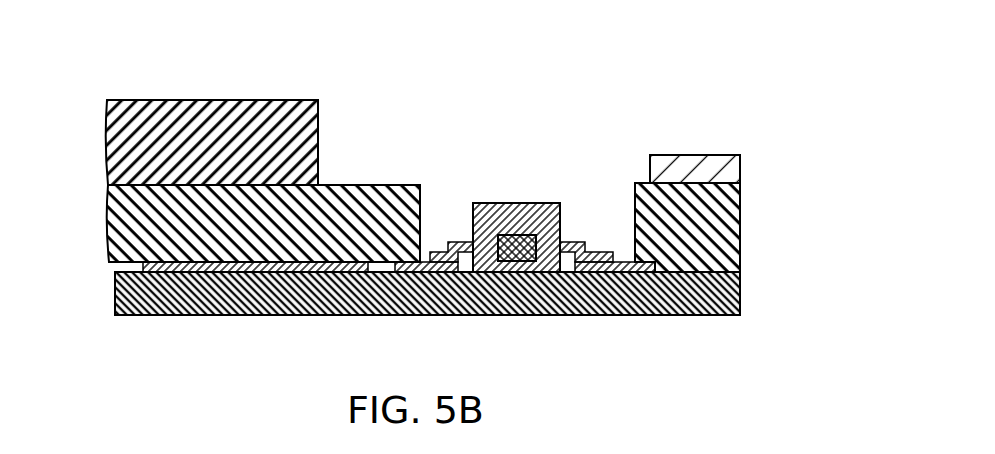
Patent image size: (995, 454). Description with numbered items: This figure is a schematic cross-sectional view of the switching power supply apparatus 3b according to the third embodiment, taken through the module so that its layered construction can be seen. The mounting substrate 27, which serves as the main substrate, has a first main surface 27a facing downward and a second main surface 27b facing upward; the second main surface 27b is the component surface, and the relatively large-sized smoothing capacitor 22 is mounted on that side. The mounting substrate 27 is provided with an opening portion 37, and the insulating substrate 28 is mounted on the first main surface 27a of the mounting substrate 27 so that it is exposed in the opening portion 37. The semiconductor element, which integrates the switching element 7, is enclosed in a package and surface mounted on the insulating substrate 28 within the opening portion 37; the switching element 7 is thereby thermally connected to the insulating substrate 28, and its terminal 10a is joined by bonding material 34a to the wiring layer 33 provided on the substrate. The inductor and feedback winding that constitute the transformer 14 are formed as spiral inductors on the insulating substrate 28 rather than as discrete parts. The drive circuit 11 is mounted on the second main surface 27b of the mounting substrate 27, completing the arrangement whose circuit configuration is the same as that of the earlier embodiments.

The switching power supply apparatus 3b is at (733, 72).
The smoothing capacitor 22 is at (296, 113).
The mounting substrate 27 is at (383, 218).
The second main surface 27b is at (380, 183).
The first main surface 27a is at (320, 265).
The transformer 14 is at (177, 266).
The wiring layer 33 is at (623, 266).
The insulating substrate 28 is at (427, 280).
The switching element 7 is at (508, 245).
The terminal electrode 10a is at (518, 203).
The bonding material 34a is at (576, 243).
The opening portion 37 is at (613, 223).
The drive circuit 11 is at (702, 168).